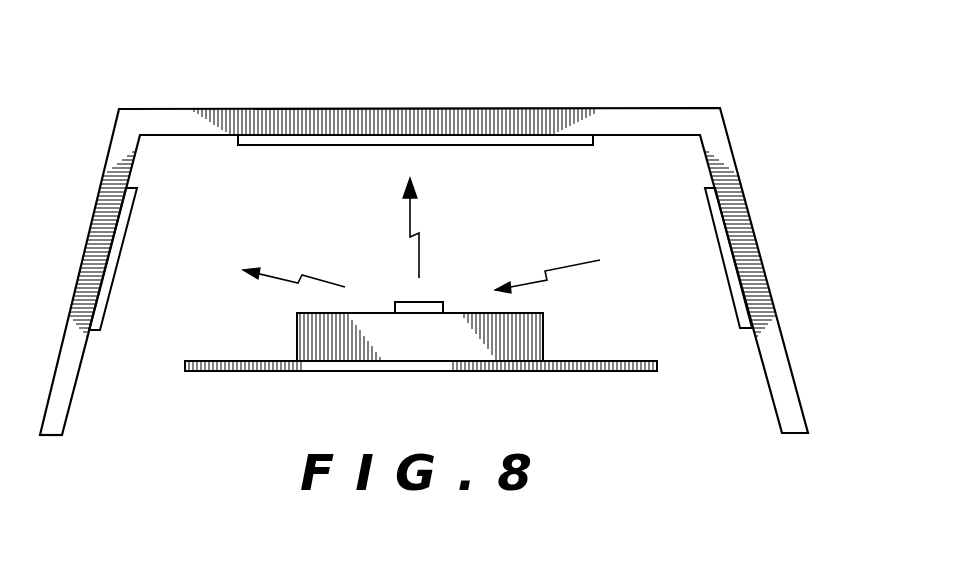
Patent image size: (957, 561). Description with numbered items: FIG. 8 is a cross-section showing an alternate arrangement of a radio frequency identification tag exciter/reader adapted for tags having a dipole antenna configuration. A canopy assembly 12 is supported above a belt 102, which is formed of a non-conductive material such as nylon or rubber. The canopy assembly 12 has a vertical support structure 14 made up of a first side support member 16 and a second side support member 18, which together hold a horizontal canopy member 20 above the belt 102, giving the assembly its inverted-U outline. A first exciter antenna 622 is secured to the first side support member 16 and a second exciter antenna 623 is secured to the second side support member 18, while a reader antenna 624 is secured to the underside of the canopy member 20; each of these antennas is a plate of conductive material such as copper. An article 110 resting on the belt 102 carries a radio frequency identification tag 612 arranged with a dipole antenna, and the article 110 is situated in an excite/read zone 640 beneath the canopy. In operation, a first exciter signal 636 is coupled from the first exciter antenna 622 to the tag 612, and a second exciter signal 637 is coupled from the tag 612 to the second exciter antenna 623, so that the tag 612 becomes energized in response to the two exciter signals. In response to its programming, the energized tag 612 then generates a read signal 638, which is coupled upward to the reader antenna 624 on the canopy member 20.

The exciter/reader canopy assembly 12 is at (658, 95).
The vertical support structure 14 is at (788, 303).
The first side support member 16 is at (742, 224).
The second side support member 18 is at (93, 247).
The horizontal canopy member 20 is at (433, 118).
The belt 102 is at (250, 361).
The article 110 is at (528, 337).
The radio frequency identification tag 612 is at (437, 302).
The first exciter antenna 622 is at (718, 254).
The second exciter antenna 623 is at (121, 259).
The reader antenna 624 is at (558, 146).
The first exciter signal 636 is at (552, 266).
The second exciter signal 637 is at (307, 271).
The read signal 638 is at (411, 210).
The excite/read zone 640 is at (360, 206).